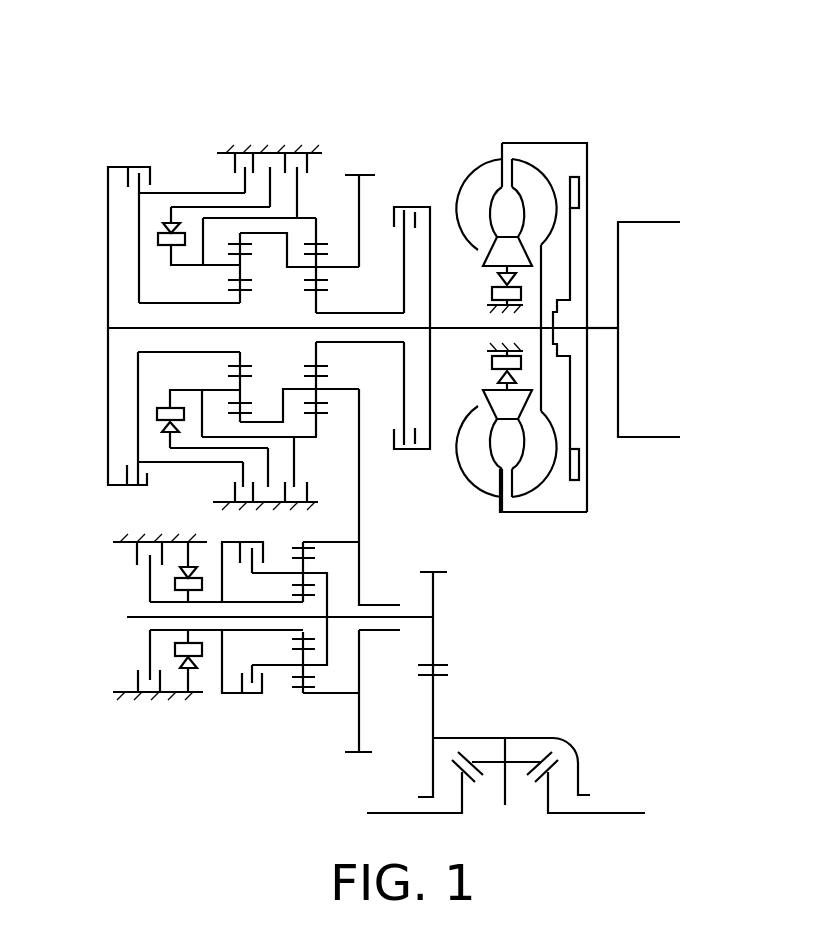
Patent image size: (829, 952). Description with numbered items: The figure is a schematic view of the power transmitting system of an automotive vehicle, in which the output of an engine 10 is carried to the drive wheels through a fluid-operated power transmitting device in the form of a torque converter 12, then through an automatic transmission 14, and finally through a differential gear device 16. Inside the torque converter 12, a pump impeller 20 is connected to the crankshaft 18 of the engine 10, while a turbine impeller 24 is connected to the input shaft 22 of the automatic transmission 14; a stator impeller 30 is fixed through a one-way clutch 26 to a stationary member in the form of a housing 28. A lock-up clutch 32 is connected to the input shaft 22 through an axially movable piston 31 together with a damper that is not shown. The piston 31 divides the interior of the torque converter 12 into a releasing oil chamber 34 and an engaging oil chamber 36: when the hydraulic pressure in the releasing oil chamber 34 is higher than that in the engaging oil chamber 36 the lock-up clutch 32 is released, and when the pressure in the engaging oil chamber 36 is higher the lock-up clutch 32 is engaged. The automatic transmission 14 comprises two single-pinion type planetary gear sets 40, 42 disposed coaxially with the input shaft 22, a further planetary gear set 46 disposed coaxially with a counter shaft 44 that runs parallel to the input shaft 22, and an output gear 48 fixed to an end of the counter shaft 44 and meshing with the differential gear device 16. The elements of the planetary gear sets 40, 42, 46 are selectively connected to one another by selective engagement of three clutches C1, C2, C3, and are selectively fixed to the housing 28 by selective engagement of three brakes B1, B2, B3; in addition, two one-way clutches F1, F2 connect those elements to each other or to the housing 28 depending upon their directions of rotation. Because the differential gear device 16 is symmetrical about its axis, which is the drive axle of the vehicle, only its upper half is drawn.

The engine 10 is at (650, 240).
The torque converter 12 is at (565, 117).
The automatic transmission 14 is at (372, 85).
The differential gear device 16 is at (500, 705).
The crankshaft 18 is at (605, 333).
The pump impeller 20 is at (492, 178).
The input shaft 22 is at (452, 328).
The turbine impeller 24 is at (525, 480).
The one-way clutch 26 is at (500, 394).
The housing 28 is at (493, 345).
The stator impeller 30 is at (498, 257).
The piston 31 is at (570, 277).
The lock-up clutch 32 is at (578, 190).
The releasing oil chamber 34 is at (583, 242).
The engaging oil chamber 36 is at (575, 515).
The planetary gear set 40 is at (323, 193).
The planetary gear set 42 is at (225, 232).
The counter shaft 44 is at (137, 615).
The planetary gear set 46 is at (290, 692).
The output gear 48 is at (440, 660).
The clutch C1 is at (410, 205).
The clutch C2 is at (130, 165).
The clutch C3 is at (253, 697).
The brake B1 is at (228, 152).
The brake B2 is at (320, 160).
The brake B3 is at (137, 678).
The one-way clutch F1 is at (158, 238).
The one-way clutch F2 is at (197, 663).